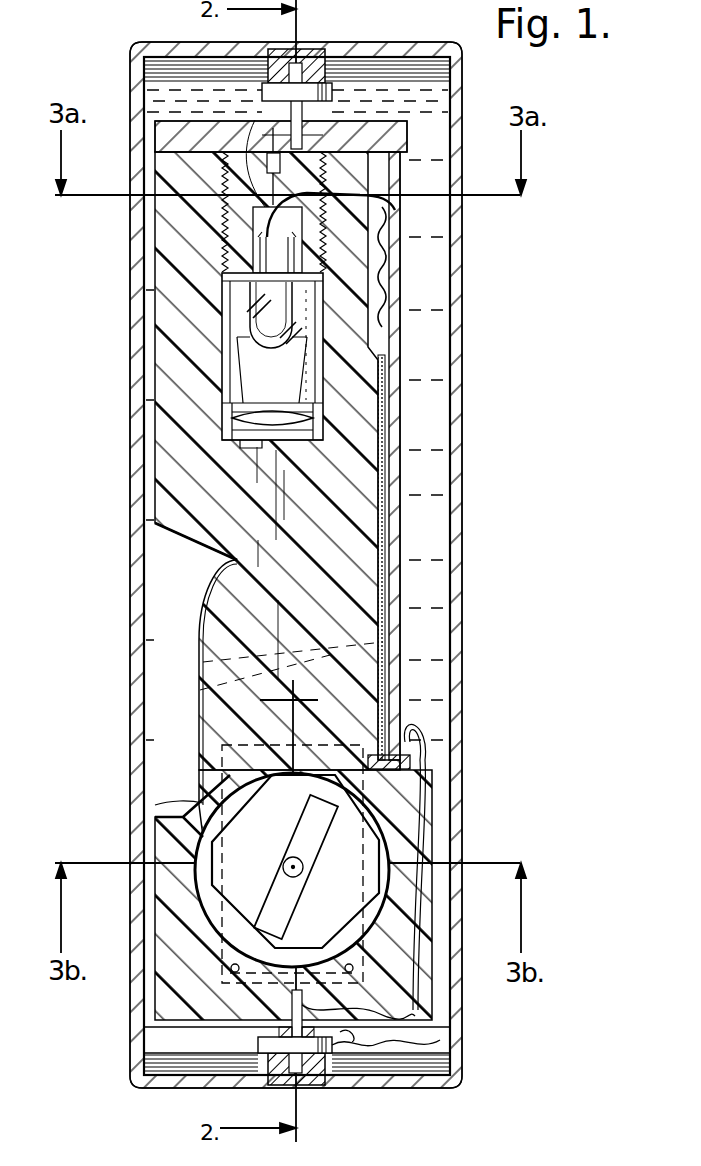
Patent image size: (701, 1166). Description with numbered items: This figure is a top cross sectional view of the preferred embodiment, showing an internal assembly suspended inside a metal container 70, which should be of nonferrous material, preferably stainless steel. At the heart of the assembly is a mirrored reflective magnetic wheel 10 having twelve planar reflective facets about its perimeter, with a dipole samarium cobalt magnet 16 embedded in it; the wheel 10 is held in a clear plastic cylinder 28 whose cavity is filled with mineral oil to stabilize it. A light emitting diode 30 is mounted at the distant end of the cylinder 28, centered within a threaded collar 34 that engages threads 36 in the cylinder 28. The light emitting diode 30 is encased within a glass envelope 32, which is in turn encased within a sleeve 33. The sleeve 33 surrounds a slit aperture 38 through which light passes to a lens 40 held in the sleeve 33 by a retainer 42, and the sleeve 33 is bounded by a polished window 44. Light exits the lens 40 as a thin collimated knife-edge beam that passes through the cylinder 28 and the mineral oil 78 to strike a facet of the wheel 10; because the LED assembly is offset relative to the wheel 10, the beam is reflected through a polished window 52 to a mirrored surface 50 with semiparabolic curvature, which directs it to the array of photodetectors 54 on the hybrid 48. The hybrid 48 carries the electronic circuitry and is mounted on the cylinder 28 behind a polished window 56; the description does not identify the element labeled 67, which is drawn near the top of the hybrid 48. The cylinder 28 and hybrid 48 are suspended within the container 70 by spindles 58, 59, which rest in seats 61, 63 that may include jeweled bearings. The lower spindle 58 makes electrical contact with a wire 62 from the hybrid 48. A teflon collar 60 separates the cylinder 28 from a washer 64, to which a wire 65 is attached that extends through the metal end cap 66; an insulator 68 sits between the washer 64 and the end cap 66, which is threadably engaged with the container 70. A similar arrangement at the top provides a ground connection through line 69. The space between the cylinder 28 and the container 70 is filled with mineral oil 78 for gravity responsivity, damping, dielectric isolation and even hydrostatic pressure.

The mirrored reflective magnetic wheel 10 is at (366, 866).
The dipole samarium cobalt magnet 16 is at (260, 912).
The clear plastic cylinder 28 is at (160, 945).
The light emitting diode 30 is at (263, 292).
The glass envelope 32 is at (253, 340).
The sleeve 33 is at (235, 327).
The threaded collar 34 is at (222, 245).
The threads 36 is at (222, 207).
The slit aperture 38 is at (240, 410).
The lens 40 is at (320, 410).
The retainer 42 is at (318, 432).
The polished window 44 is at (262, 440).
The hybrid 48 is at (398, 200).
The mirrored surface 50 is at (197, 601).
The polished window 52 is at (198, 803).
The array of photodetectors 54 is at (383, 557).
The polished window 56 is at (380, 516).
The spindle 58 is at (289, 1005).
The spindle 59 is at (310, 128).
The teflon collar 60 is at (282, 1032).
The seat 61 is at (322, 50).
The wire 62 is at (420, 766).
The seat 63 is at (300, 1063).
The washer 64 is at (231, 1093).
The wire 65 is at (420, 1037).
The metal end cap 66 is at (453, 1083).
The conductor wire 67 is at (372, 198).
The insulator 68 is at (255, 120).
The line 69 is at (297, 50).
The container 70 is at (141, 829).
The mineral oil 78 is at (432, 665).